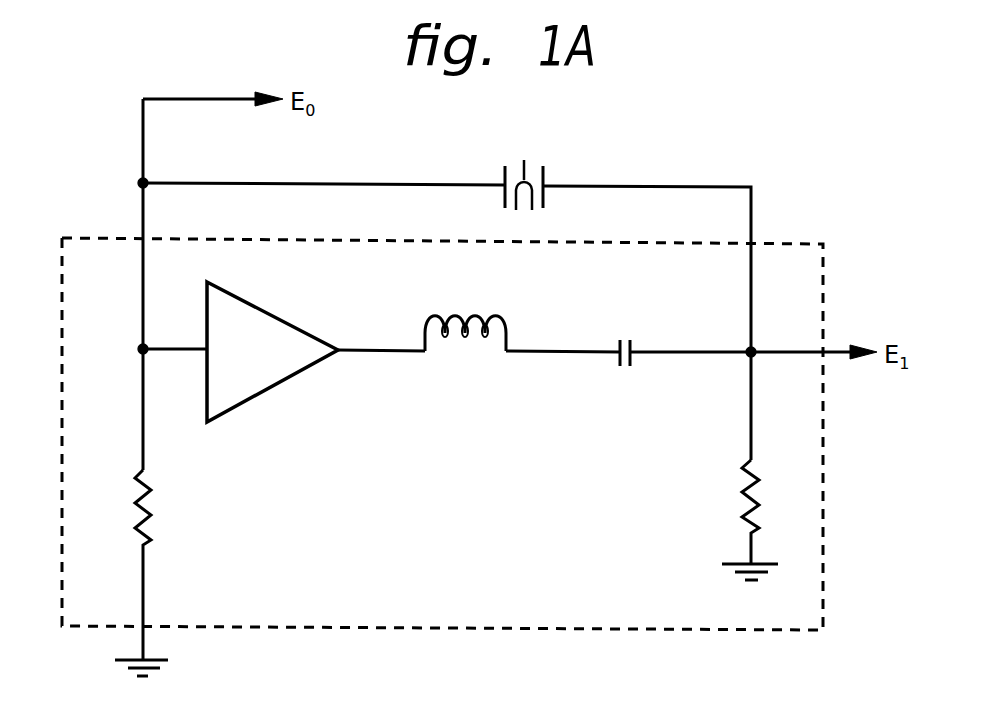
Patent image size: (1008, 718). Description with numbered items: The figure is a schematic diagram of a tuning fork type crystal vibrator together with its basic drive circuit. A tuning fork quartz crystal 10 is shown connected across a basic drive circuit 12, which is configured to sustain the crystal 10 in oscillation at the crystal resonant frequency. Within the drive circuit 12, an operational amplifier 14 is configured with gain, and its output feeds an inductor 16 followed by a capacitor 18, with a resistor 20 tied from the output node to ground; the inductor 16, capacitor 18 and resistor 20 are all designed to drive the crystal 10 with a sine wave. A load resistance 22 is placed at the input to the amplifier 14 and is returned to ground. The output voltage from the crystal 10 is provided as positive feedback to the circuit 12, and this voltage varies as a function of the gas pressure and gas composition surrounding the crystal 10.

The tuning fork quartz crystal 10 is at (505, 185).
The basic drive circuit 12 is at (826, 536).
The operational amplifier 14 is at (258, 395).
The inductor 16 is at (497, 321).
The capacitor 18 is at (618, 358).
The resistor 20 is at (745, 516).
The load resistance 22 is at (150, 500).